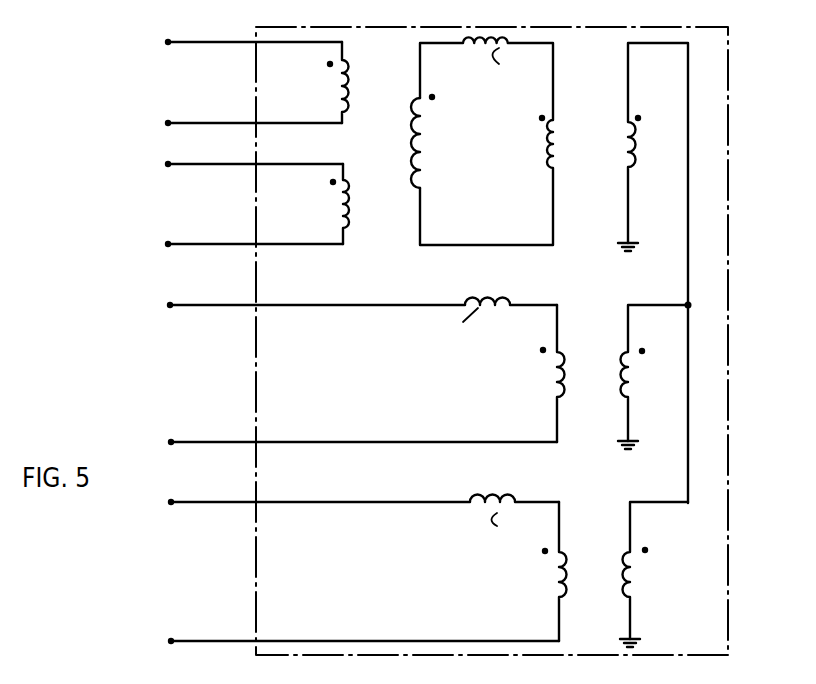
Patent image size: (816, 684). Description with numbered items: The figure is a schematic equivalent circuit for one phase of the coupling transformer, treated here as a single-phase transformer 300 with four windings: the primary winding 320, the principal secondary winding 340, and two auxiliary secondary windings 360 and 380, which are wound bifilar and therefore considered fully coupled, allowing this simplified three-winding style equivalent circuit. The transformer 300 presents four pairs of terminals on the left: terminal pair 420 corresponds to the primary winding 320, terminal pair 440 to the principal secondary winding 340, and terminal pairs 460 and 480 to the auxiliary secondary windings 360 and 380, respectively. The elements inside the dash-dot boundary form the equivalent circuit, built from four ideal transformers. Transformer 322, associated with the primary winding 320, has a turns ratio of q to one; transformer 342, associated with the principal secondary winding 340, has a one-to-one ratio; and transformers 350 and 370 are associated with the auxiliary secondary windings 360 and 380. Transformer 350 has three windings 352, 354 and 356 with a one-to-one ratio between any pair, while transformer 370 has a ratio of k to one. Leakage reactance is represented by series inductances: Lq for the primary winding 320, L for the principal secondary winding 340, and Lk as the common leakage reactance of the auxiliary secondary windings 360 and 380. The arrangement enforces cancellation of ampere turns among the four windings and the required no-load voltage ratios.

The transformer 300 is at (130, 302).
The primary winding 320 is at (188, 581).
The transformer 322 is at (612, 525).
The principal secondary winding 340 is at (186, 385).
The transformer 342 is at (609, 323).
The transformer 350 is at (394, 63).
The winding 352 is at (340, 196).
The winding 354 is at (342, 82).
The winding 356 is at (420, 138).
The auxiliary secondary winding 360 is at (185, 215).
The transformer 370 is at (603, 68).
The auxiliary secondary winding 380 is at (187, 95).
The terminal pair 420 is at (173, 500).
The terminal pair 440 is at (170, 303).
The terminal pair 460 is at (169, 163).
The terminal pair 480 is at (168, 40).